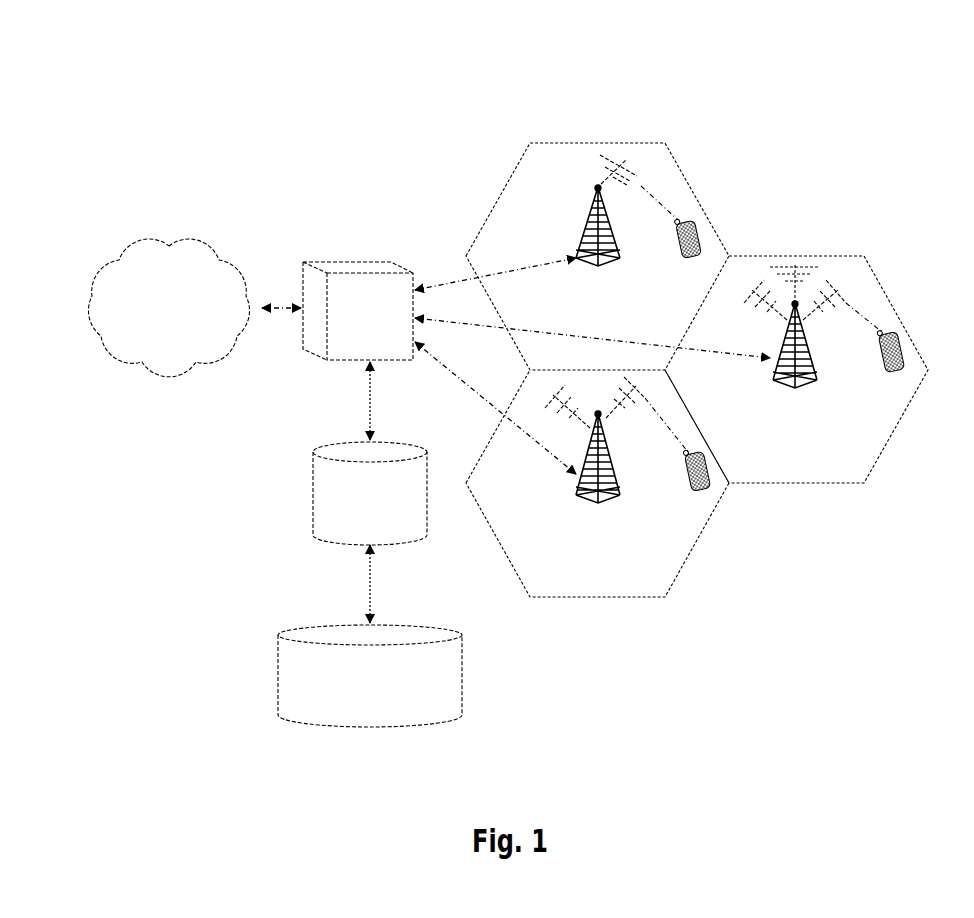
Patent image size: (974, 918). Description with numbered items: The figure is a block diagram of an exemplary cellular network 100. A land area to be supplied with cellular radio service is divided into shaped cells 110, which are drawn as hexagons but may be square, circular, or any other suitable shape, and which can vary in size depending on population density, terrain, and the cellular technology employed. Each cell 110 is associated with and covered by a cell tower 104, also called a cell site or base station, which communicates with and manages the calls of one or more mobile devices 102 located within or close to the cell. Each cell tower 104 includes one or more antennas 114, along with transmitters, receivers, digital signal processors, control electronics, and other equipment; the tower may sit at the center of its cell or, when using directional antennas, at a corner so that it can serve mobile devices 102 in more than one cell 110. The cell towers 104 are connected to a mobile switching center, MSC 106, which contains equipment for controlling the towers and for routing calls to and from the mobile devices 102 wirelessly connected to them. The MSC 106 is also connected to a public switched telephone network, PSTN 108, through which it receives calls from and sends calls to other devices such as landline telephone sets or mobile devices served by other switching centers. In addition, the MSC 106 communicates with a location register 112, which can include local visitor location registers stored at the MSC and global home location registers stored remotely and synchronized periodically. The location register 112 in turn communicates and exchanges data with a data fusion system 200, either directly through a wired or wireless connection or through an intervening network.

The cellular network 100 is at (330, 48).
The mobile device 102 is at (700, 243).
The cell tower 104 is at (607, 263).
The mobile switching center 106 is at (358, 311).
The public switched telephone network 108 is at (168, 308).
The cell 110 is at (697, 370).
The location register 112 is at (370, 493).
The antenna 114 is at (613, 155).
The data fusion system 200 is at (370, 676).